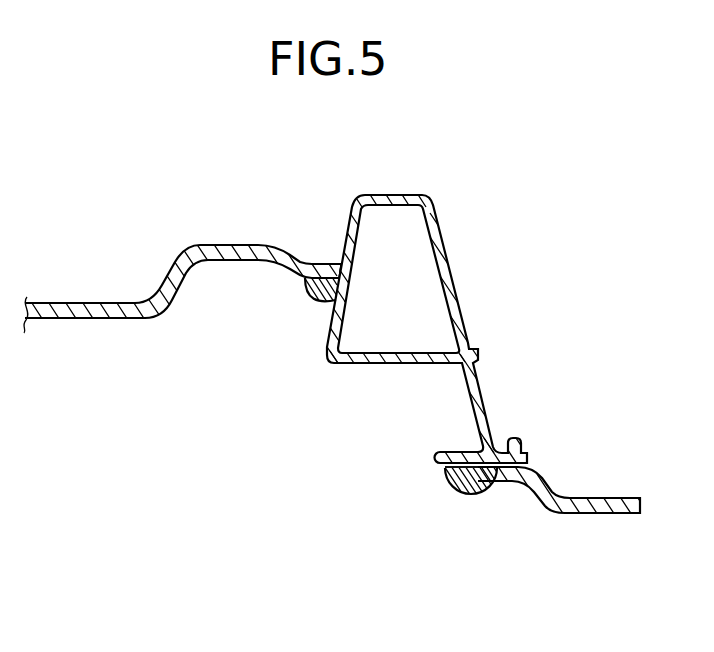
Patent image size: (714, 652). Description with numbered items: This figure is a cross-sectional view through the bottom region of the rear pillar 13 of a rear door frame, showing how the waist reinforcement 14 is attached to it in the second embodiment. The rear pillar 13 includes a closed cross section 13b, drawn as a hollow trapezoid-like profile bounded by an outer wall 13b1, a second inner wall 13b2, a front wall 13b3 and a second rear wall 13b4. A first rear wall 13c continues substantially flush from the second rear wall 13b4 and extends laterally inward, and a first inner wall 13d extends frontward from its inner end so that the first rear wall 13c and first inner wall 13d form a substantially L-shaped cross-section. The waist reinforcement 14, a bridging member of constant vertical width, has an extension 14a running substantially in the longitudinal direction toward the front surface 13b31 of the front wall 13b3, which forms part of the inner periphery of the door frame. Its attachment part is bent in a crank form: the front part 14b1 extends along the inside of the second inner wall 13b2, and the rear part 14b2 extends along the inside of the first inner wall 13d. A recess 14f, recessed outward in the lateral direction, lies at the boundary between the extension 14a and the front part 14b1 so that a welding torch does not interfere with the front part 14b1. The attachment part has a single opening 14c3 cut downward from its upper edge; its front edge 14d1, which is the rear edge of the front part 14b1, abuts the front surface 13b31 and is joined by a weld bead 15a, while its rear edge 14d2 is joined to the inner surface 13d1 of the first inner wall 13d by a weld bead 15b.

The rear pillar 13 is at (386, 312).
The closed cross section 13b is at (374, 284).
The outer wall 13b1 is at (389, 203).
The second inner wall 13b2 is at (382, 364).
The front wall 13b3 is at (346, 232).
The front surface 13b31 is at (328, 322).
The second rear wall 13b4 is at (448, 257).
The first rear wall 13c is at (486, 399).
The first inner wall 13d is at (426, 480).
The inner surface 13d1 is at (426, 493).
The waist reinforcement 14 is at (291, 288).
The extension 14a is at (74, 316).
The front part 14b1 is at (320, 266).
The rear part 14b2 is at (519, 530).
The opening 14c3 is at (451, 442).
The front edge 14d1 is at (335, 270).
The rear edge 14d2 is at (457, 494).
The recess 14f is at (220, 259).
The weld bead 15a is at (308, 296).
The weld bead 15b is at (486, 498).